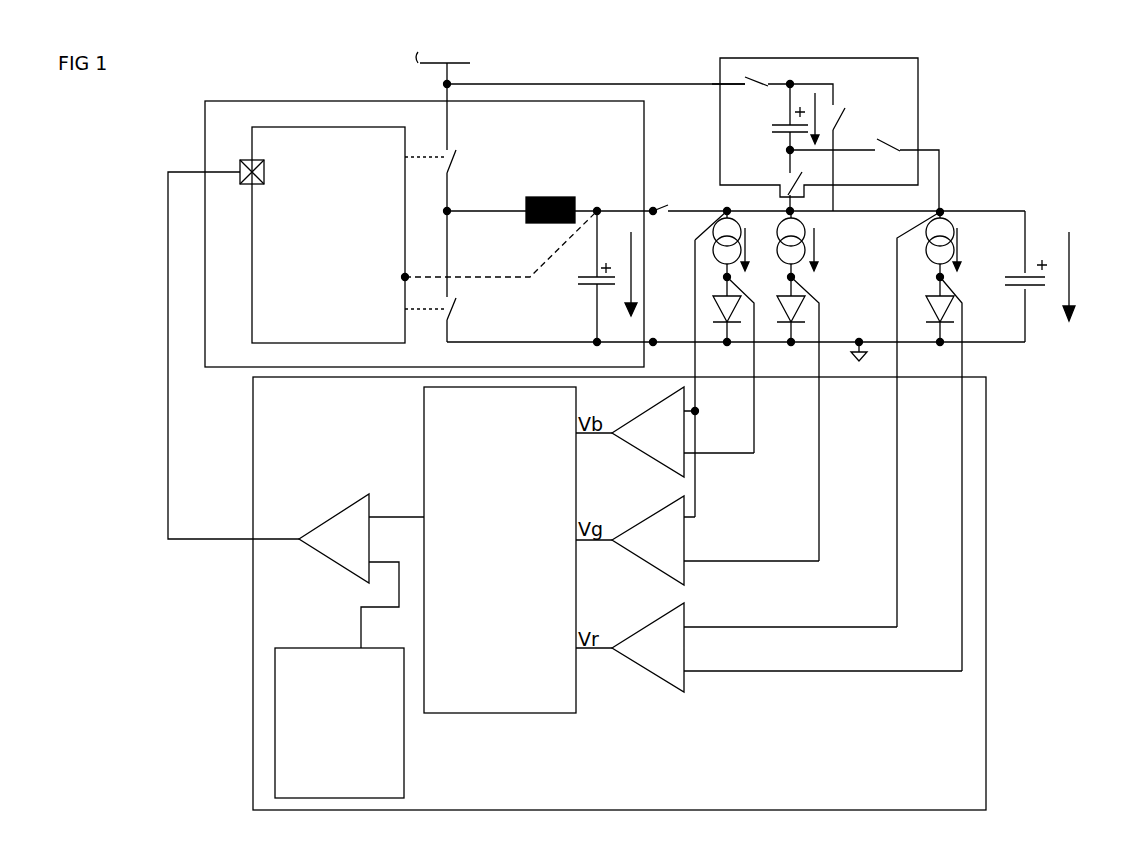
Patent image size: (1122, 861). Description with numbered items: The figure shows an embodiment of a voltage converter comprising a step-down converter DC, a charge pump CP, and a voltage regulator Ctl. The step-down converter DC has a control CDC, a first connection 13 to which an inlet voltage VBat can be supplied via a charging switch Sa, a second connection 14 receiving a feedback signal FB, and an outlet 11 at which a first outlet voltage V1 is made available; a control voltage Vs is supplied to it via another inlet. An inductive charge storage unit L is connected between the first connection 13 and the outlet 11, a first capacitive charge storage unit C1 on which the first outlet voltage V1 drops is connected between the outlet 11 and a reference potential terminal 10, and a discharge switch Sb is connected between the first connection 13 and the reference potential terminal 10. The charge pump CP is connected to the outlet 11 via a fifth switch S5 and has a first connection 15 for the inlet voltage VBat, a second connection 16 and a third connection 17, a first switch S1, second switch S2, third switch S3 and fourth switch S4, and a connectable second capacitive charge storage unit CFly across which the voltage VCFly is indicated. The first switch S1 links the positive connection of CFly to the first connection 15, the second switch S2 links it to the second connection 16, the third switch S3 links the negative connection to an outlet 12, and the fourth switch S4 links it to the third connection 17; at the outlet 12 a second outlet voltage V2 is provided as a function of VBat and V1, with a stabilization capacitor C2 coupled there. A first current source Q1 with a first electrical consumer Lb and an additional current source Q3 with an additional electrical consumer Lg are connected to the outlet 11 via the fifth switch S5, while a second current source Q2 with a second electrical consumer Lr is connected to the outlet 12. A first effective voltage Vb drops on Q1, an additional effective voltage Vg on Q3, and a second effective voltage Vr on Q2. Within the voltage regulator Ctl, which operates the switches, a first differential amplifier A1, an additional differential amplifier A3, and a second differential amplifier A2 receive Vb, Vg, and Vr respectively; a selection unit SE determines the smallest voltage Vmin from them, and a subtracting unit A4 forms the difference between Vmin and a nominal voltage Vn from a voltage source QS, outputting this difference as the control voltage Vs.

The reference potential terminal 10 is at (862, 356).
The outlet 11 is at (653, 208).
The outlet 12 is at (939, 212).
The first connection 13 is at (447, 210).
The second connection 14 is at (405, 276).
The first connection 15 is at (719, 84).
The second connection 16 is at (834, 188).
The third connection 17 is at (789, 209).
The step-down converter DC is at (292, 101).
The control CDC is at (418, 126).
The inlet voltage VBat is at (580, 96).
The charging switch Sa is at (457, 153).
The discharge switch Sb is at (455, 301).
The feedback signal FB is at (500, 245).
The inductive charge storage unit L is at (550, 199).
The first capacitive charge storage unit C1 is at (581, 276).
The first outlet voltage V1 is at (644, 274).
The fifth switch S5 is at (668, 207).
The charge pump CP is at (918, 76).
The first switch S1 is at (746, 81).
The second capacitive charge storage unit CFly is at (783, 120).
The voltage across second capacitive charge storage unit VCFly is at (818, 93).
The second switch S2 is at (845, 109).
The third switch S3 is at (882, 141).
The fourth switch S4 is at (790, 180).
The first current source Q1 is at (713, 241).
The second current source Q2 is at (944, 217).
The additional current source Q3 is at (794, 268).
The first effective voltage Vb is at (757, 248).
The additional effective voltage Vg is at (826, 249).
The second effective voltage Vr is at (967, 249).
The first electrical consumer Lb is at (713, 306).
The additional electrical consumer Lg is at (803, 304).
The second electrical consumer Lr is at (935, 312).
The stabilization capacitor C2 is at (1012, 276).
The second outlet voltage V2 is at (1081, 276).
The voltage regulator Ctl is at (986, 593).
The selection unit SE is at (424, 418).
The voltage source QS is at (404, 768).
The subtracting unit A4 is at (325, 553).
The control voltage Vs is at (233, 357).
The smallest voltage Vmin is at (396, 509).
The nominal voltage Vn is at (374, 605).
The first differential amplifier A1 is at (633, 447).
The additional differential amplifier A3 is at (633, 555).
The second differential amplifier A2 is at (633, 663).